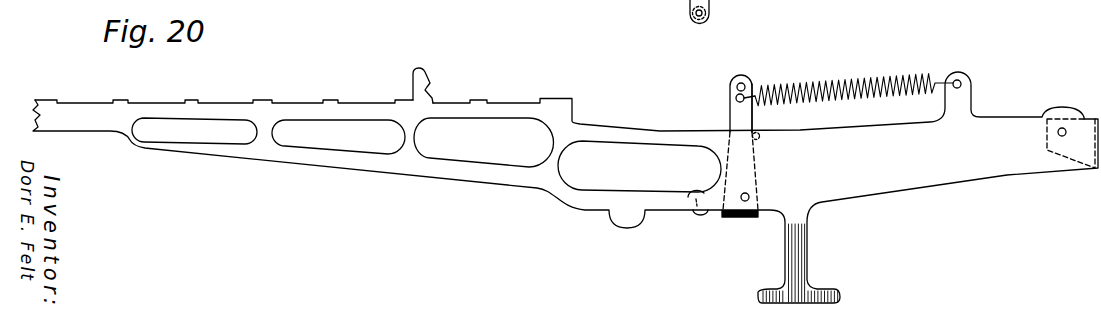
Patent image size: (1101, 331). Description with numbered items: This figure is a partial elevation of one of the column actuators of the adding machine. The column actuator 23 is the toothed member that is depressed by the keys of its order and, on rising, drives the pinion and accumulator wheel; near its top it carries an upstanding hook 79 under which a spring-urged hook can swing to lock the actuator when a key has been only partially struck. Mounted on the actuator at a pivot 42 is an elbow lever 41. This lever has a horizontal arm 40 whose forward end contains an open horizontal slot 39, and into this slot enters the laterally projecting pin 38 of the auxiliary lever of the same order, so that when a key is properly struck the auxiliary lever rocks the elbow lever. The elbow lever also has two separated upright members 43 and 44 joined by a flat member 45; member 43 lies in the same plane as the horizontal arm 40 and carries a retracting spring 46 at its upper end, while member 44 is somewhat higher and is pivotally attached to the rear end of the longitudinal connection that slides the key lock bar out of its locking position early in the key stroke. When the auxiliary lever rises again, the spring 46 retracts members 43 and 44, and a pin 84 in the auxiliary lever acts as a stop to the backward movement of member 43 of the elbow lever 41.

The column actuator 23 is at (217, 106).
The upstanding hook 79 is at (424, 70).
The laterally projecting pin 38 is at (687, 23).
The elbow lever 41 is at (730, 112).
The upright member 44 is at (752, 78).
The upright member 43 is at (753, 118).
The pin 84 is at (760, 140).
The retracting spring 46 is at (838, 80).
The pivot 42 is at (750, 196).
The horizontal arm 40 is at (697, 192).
The open horizontal slot 39 is at (693, 216).
The flat member 45 is at (742, 218).